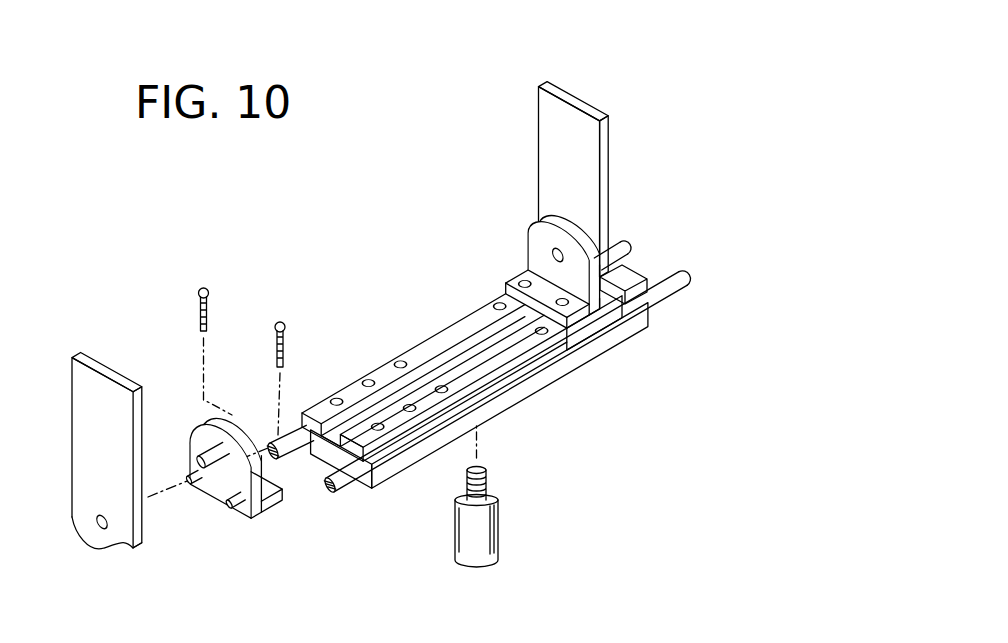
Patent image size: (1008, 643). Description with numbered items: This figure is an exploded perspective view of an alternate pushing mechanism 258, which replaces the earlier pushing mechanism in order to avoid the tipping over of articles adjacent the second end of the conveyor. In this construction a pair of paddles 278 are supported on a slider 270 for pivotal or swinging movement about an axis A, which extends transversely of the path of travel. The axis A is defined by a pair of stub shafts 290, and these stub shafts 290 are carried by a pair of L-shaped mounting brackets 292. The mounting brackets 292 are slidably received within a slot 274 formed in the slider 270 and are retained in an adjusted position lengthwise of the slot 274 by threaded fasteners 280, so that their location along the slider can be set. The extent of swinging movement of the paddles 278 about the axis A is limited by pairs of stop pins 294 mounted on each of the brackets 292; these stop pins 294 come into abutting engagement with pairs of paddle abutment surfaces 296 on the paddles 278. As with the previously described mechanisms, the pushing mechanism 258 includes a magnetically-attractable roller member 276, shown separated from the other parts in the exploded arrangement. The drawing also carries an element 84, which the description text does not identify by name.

The pushing mechanism 258 is at (475, 320).
The slider 270 is at (475, 366).
The slot 274 is at (450, 343).
The magnetically-attractable roller member 276 is at (497, 530).
The paddles 278 is at (349, 320).
The threaded fasteners 280 is at (276, 330).
The guide rod 84 is at (630, 247).
The stub shafts 290 is at (367, 340).
The L-shaped mounting brackets 292 is at (552, 253).
The stop pins 294 is at (233, 505).
The paddle abutment surfaces 296 is at (116, 552).
The axis A is at (163, 490).